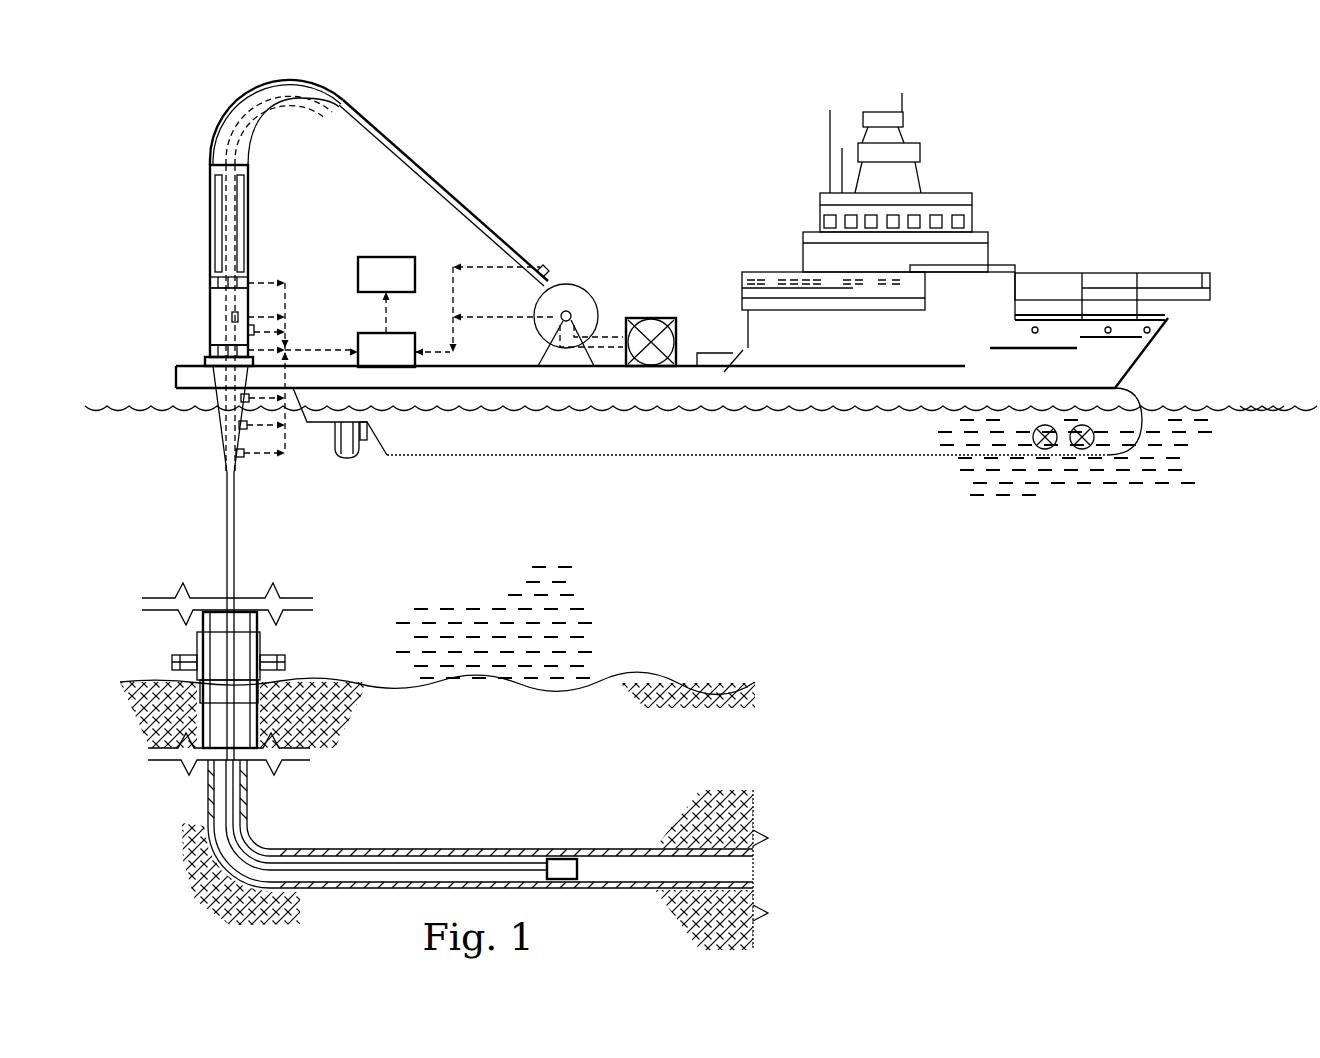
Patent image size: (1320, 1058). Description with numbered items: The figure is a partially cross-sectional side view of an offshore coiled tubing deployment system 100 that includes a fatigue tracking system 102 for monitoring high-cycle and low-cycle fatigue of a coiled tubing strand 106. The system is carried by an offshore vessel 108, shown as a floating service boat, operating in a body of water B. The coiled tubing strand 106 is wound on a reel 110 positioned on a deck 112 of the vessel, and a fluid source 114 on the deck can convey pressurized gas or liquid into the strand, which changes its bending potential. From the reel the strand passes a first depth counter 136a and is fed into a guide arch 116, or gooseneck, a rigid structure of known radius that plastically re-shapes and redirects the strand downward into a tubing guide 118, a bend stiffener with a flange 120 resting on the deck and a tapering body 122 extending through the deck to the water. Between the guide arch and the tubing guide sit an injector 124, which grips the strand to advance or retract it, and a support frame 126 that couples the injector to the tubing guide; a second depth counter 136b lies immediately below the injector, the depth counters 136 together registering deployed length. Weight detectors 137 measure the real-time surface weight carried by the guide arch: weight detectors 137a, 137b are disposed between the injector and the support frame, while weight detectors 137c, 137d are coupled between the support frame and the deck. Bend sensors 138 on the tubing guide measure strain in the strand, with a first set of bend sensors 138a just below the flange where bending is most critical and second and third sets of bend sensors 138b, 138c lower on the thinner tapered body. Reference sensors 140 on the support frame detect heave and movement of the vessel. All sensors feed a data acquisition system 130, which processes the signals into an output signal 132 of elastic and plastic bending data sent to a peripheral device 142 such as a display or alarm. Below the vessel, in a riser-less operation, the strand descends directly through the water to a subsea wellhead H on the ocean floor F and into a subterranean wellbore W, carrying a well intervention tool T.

The coiled tubing deployment system 100 is at (1158, 92).
The fatigue tracking system 102 is at (338, 183).
The coiled tubing strand 106 is at (456, 195).
The offshore vessel 108 is at (1040, 205).
The reel 110 is at (576, 289).
The deck 112 is at (798, 366).
The fluid source 114 is at (650, 316).
The guide arch 116 is at (255, 87).
The tubing guide 118 is at (183, 492).
The flange 120 is at (212, 377).
The tapering body 122 is at (222, 442).
The injector 124 is at (210, 222).
The support frame 126 is at (210, 328).
The data acquisition system 130 is at (403, 333).
The output signal 132 is at (374, 333).
The depth counters 136 is at (585, 203).
The first depth counter 136a is at (543, 265).
The second depth counter 136b is at (232, 316).
The weight detectors 137 is at (100, 248).
The first weight detector 137a is at (210, 280).
The second weight detector 137b is at (243, 272).
The third weight detector 137c is at (210, 352).
The fourth weight detector 137d is at (229, 351).
The bend sensors 138 is at (328, 520).
The first set of bend sensors 138a is at (242, 400).
The second set of bend sensors 138b is at (248, 427).
The third set of bend sensors 138c is at (241, 456).
The reference sensors 140 is at (251, 323).
The peripheral device 142 is at (405, 257).
The subsea wellhead H is at (272, 640).
The ocean floor F is at (690, 675).
The body of water B is at (1256, 403).
The subterranean wellbore W is at (417, 840).
The well intervention tool T is at (566, 850).